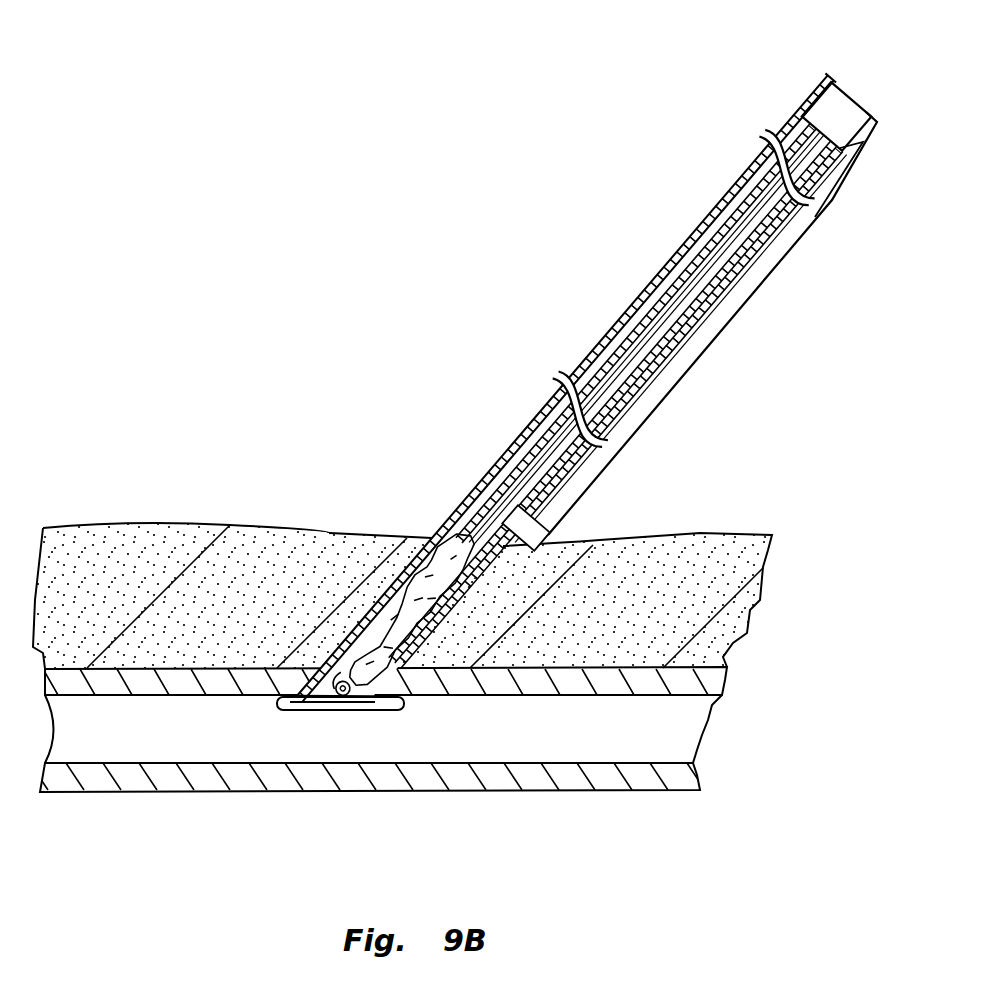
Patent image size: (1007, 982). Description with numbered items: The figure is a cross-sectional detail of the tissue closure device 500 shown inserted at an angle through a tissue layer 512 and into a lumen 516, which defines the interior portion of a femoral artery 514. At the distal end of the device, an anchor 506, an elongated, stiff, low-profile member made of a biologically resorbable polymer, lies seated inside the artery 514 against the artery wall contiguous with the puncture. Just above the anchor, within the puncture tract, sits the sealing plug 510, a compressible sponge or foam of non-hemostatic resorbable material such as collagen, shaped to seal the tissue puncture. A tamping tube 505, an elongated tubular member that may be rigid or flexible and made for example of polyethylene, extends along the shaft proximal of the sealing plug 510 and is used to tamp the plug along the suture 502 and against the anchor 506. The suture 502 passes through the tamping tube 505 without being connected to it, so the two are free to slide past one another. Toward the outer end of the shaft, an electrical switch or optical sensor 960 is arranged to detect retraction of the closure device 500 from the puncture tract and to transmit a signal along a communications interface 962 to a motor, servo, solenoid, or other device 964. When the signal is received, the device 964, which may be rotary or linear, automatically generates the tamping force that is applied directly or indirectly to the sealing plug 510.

The tissue closure device 500 is at (254, 311).
The suture 502 is at (630, 355).
The tamping tube 505 is at (647, 288).
The anchor 506 is at (293, 713).
The sealing plug 510 is at (414, 595).
The tissue layer 512 is at (651, 615).
The femoral artery 514 is at (698, 683).
The lumen 516 is at (571, 743).
The electrical switch or optical sensor 960 is at (550, 530).
The communications interface 962 is at (704, 352).
The motor, servo, solenoid, or other device 964 is at (830, 112).